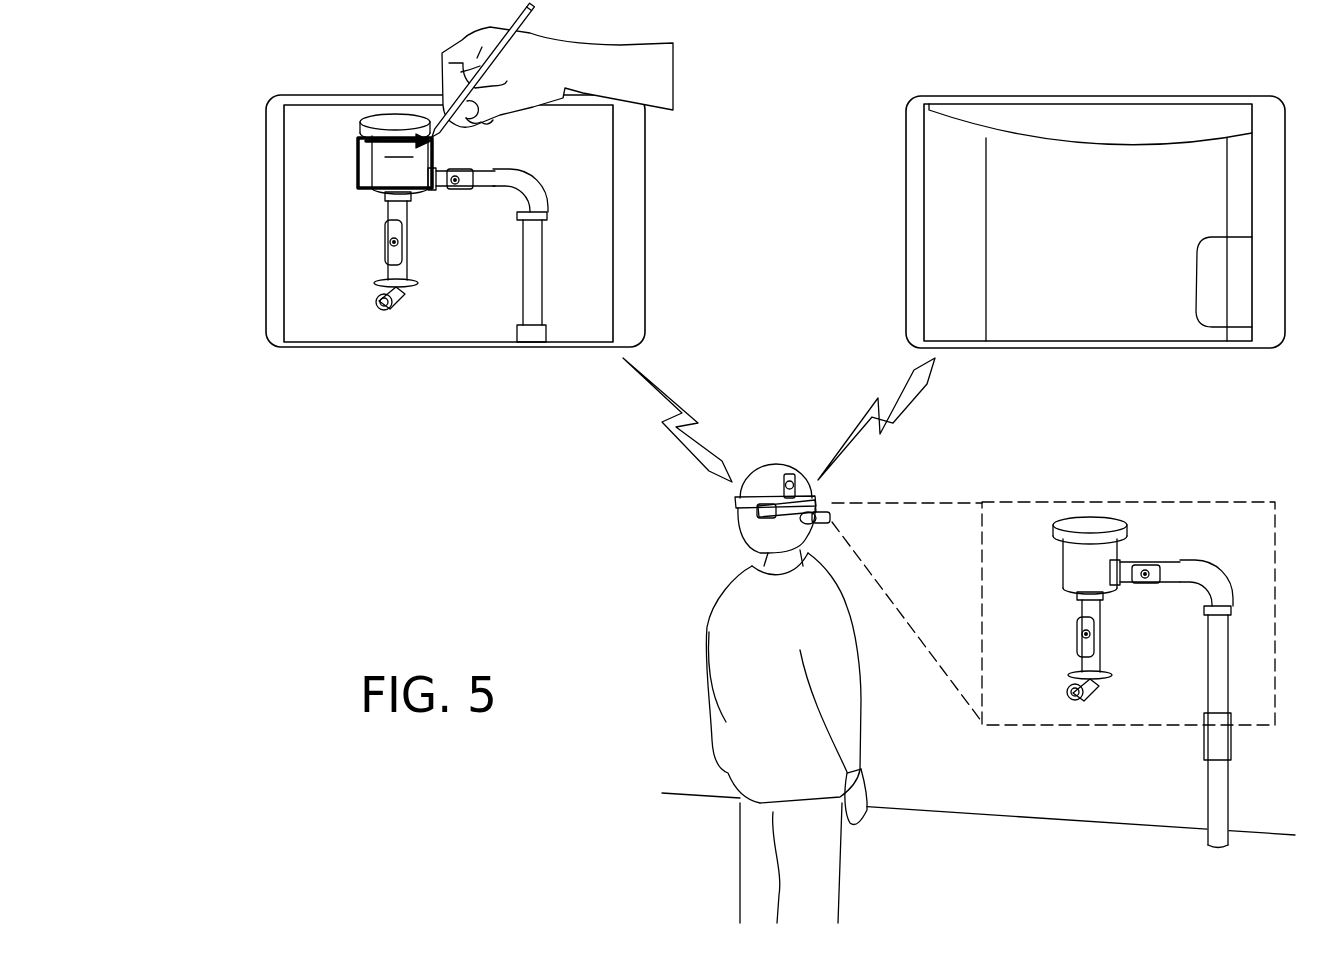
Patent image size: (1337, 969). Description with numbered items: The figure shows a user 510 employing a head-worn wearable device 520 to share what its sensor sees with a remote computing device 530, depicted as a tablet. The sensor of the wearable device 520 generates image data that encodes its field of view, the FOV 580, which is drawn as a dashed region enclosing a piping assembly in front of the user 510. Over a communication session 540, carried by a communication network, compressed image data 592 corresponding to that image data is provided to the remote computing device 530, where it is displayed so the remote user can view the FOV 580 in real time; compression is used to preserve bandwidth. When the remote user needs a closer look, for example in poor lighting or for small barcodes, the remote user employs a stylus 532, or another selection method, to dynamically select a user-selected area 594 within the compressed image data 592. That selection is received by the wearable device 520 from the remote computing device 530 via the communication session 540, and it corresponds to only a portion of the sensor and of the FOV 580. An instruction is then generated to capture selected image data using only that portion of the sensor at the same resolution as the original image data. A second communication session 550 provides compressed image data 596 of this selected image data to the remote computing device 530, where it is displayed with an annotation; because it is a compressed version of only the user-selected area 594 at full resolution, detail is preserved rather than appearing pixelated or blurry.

The user 510 is at (716, 840).
The wearable device 520 is at (720, 505).
The remote computing device 530 is at (239, 163).
The stylus 532 is at (488, 45).
The communication session 540 is at (670, 433).
The communication session 550 is at (891, 425).
The FOV 580 is at (1243, 502).
The compressed image data 592 is at (530, 336).
The user-selected area 594 is at (356, 150).
The compressed image data 596 is at (1127, 203).